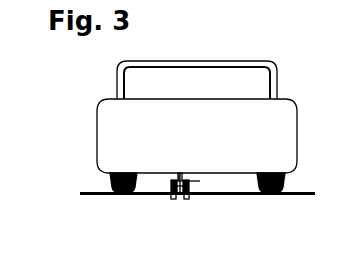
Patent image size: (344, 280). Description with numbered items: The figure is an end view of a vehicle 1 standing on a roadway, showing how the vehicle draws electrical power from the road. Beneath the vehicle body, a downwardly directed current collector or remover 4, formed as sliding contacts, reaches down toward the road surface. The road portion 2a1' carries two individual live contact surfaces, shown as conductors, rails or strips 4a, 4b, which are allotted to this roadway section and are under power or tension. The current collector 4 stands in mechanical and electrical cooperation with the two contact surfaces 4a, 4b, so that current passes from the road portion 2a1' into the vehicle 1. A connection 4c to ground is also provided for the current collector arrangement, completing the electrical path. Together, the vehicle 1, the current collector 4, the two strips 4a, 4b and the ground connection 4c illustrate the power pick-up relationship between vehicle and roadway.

The vehicle 1 is at (116, 119).
The road portion 2a1' is at (197, 212).
The current collector 4 is at (189, 181).
The contact surface 4a is at (186, 199).
The contact surface 4b is at (173, 199).
The connection to ground 4c is at (171, 182).